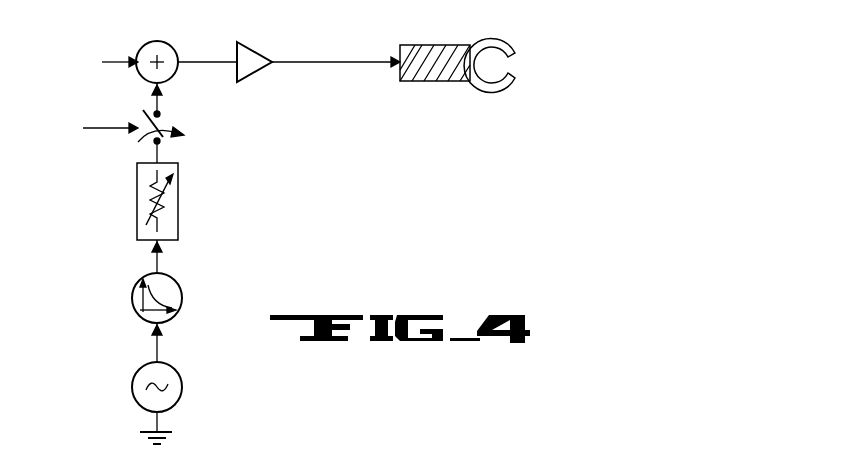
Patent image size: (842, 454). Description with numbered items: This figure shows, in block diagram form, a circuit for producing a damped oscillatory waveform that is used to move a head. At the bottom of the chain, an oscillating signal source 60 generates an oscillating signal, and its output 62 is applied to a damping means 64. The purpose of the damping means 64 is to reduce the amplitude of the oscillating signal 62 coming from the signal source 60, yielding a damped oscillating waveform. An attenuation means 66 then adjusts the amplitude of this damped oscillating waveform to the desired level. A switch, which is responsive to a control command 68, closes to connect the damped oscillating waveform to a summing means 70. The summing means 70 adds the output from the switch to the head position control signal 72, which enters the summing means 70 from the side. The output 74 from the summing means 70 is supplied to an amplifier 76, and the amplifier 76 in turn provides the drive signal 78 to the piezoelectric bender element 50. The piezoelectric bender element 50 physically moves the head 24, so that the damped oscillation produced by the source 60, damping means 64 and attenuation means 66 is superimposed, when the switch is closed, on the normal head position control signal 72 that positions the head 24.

The head position control signal 72 is at (116, 60).
The summing means 70 is at (170, 46).
The output from summing means 74 is at (209, 60).
The amplifier 76 is at (250, 54).
The drive signal 78 is at (310, 60).
The piezoelectric bender element 50 is at (428, 45).
The head 24 is at (511, 46).
The control command 68 is at (108, 127).
The attenuation means 66 is at (179, 190).
The damping means 64 is at (182, 291).
The output from oscillating signal source 62 is at (158, 348).
The oscillating signal source 60 is at (182, 386).